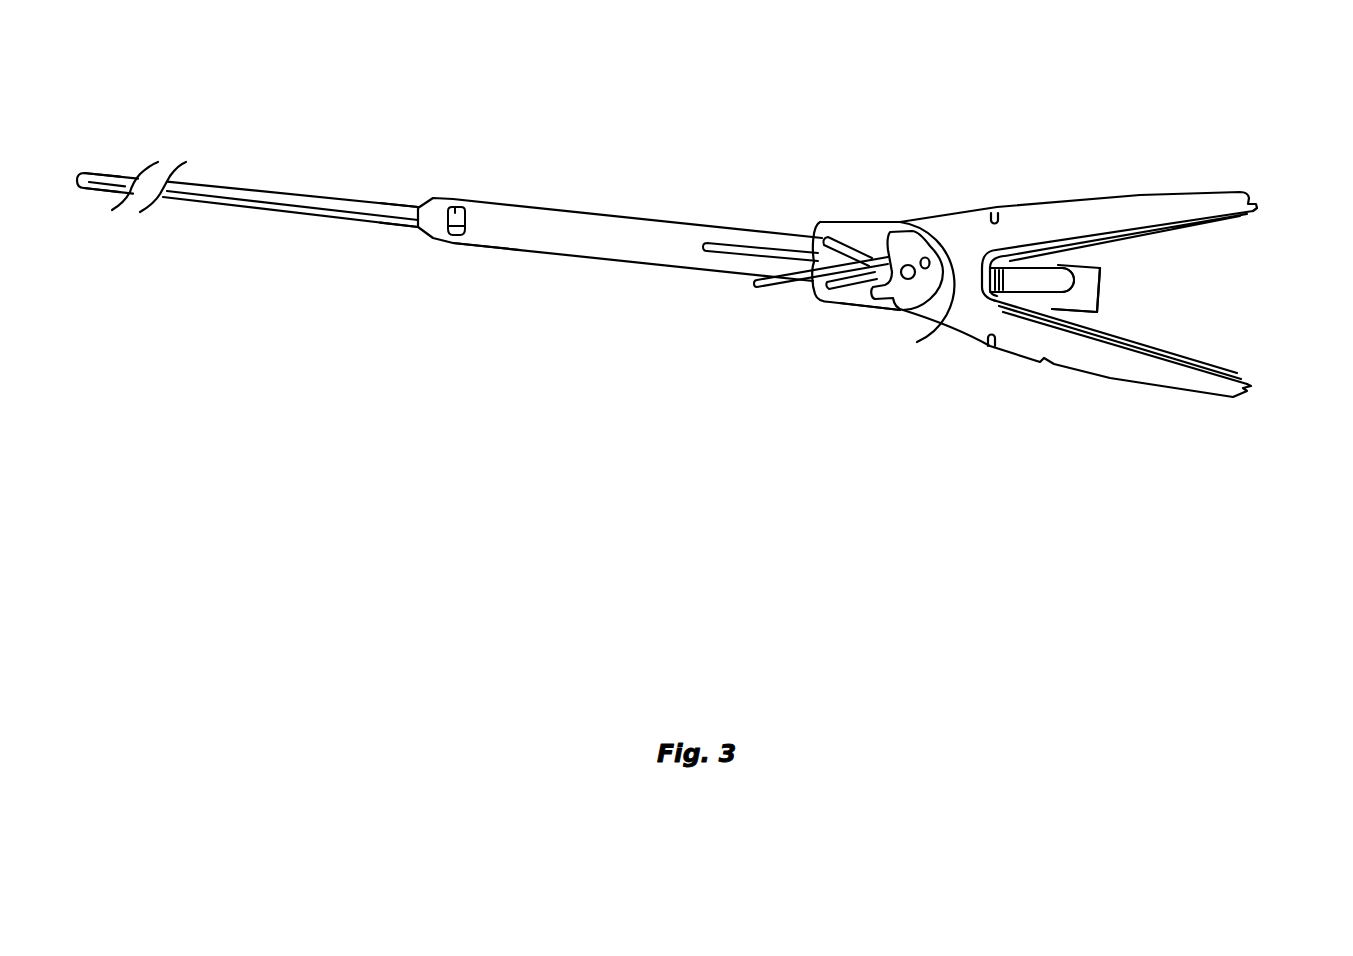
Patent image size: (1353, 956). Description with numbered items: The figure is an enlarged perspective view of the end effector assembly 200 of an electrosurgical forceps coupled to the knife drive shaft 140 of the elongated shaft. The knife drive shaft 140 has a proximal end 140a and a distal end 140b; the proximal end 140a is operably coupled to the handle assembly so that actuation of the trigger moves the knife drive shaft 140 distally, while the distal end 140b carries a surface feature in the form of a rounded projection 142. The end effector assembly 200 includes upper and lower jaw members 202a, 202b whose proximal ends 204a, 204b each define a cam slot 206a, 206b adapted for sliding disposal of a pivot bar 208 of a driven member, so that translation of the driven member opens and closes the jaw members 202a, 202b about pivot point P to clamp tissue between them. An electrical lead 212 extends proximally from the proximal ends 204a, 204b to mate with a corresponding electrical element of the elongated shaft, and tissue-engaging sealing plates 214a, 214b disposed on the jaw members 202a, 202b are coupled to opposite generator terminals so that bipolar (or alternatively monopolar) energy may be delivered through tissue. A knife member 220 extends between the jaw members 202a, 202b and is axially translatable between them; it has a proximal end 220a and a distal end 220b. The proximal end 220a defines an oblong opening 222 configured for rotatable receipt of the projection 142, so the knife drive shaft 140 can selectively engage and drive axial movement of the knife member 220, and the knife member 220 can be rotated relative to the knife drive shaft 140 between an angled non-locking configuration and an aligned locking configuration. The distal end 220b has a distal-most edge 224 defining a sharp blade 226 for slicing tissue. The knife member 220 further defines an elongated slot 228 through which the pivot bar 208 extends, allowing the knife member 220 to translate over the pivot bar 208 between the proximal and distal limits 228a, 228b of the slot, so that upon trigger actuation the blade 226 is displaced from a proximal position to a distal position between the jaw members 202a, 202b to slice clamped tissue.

The knife drive shaft 140 is at (262, 184).
The proximal end of knife drive shaft 140a is at (104, 173).
The distal end of knife drive shaft 140b is at (393, 205).
The rounded projection 142 is at (454, 207).
The end effector assembly 200 is at (1111, 253).
The upper jaw member 202a is at (1083, 199).
The lower jaw member 202b is at (1068, 377).
The proximal end of upper jaw member 204a is at (853, 223).
The proximal end of lower jaw member 204b is at (866, 308).
The cam slot 206a is at (820, 225).
The cam slot 206b is at (821, 284).
The pivot bar 208 is at (910, 230).
The electrical lead 212 is at (820, 223).
The tissue-engaging sealing plate 214a is at (1217, 223).
The tissue-engaging sealing plate 214b is at (1226, 364).
The knife member 220 is at (605, 205).
The proximal end of knife member 220a is at (465, 245).
The distal end of knife member 220b is at (1084, 307).
The oblong opening 222 is at (442, 241).
The distal-most edge 224 is at (1118, 271).
The blade 226 is at (1105, 285).
The elongated slot 228 is at (1058, 255).
The proximal limit of elongated slot 228a is at (706, 249).
The distal limit of elongated slot 228b is at (1058, 255).